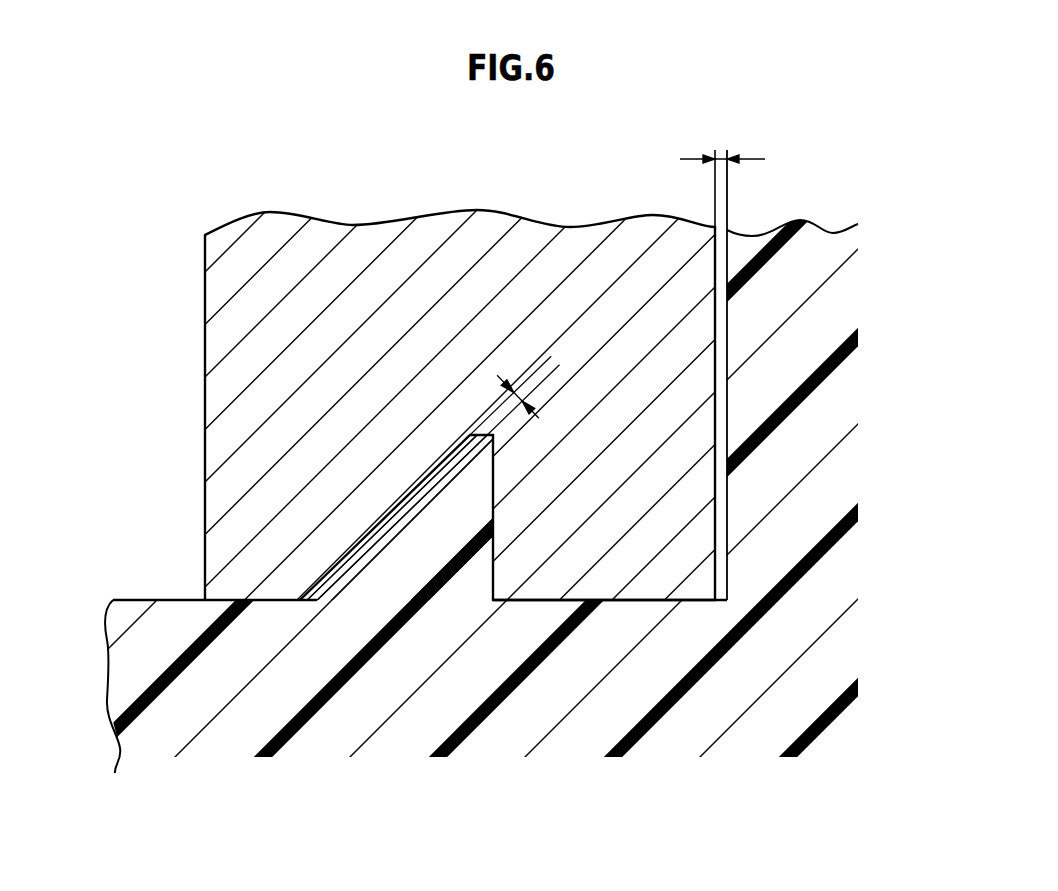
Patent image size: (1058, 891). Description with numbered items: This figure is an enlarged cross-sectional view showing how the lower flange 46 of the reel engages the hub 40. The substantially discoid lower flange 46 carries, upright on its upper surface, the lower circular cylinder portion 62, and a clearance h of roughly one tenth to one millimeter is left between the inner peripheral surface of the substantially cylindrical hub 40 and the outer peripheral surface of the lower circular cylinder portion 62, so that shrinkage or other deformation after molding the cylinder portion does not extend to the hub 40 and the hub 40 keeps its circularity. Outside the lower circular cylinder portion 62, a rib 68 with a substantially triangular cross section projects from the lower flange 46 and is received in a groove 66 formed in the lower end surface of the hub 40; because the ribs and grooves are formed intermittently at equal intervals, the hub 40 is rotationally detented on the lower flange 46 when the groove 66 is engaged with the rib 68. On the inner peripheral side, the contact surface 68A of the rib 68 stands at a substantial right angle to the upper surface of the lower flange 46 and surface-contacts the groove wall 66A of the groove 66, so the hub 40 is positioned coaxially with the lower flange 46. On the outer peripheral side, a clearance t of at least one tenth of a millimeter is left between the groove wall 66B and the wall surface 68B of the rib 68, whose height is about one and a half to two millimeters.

The hub 40 is at (222, 340).
The lower flange 46 is at (141, 666).
The lower circular cylinder portion 62 is at (830, 313).
The groove 66 is at (338, 168).
The groove wall 66A is at (492, 483).
The groove wall 66B is at (400, 508).
The rib 68 is at (370, 830).
The contact surface 68A is at (495, 550).
The wall surface 68B is at (380, 534).
The clearance t is at (531, 378).
The clearance h is at (720, 157).